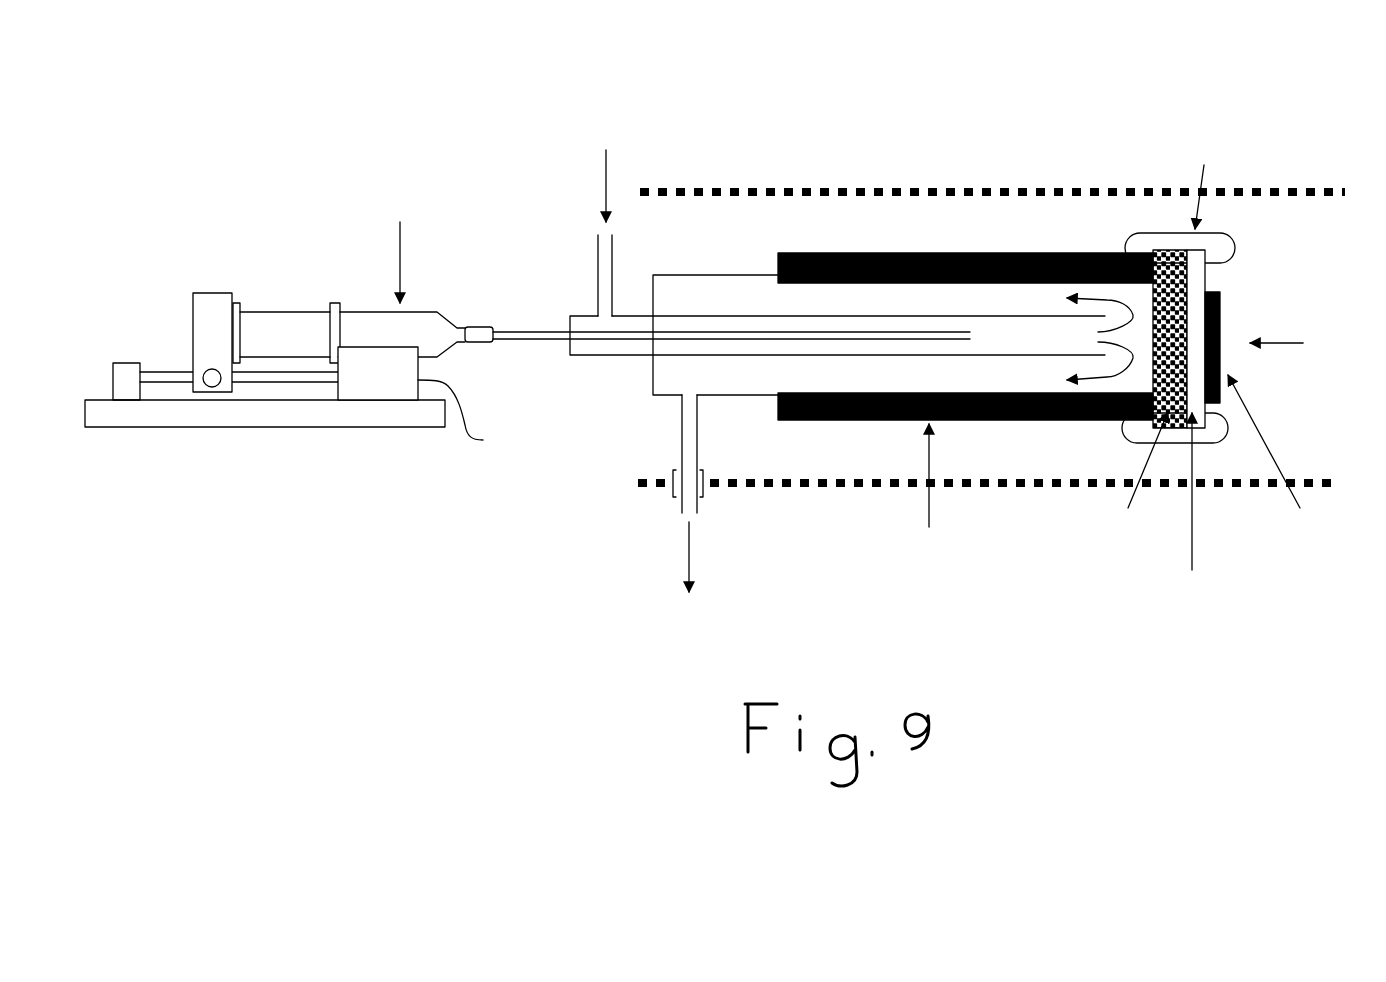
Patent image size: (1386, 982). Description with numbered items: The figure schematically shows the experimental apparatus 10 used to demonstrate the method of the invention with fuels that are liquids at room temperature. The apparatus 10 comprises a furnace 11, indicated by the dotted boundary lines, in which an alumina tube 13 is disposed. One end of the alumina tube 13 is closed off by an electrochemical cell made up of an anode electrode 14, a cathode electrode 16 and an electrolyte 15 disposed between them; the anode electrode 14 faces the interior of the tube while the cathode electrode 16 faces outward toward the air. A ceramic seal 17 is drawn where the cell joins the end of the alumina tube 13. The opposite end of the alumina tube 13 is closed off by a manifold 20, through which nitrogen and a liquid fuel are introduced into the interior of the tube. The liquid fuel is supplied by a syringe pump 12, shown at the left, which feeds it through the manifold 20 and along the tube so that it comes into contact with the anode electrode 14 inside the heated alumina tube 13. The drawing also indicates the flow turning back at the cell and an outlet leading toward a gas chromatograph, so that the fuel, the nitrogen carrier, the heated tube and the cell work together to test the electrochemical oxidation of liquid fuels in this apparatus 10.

The apparatus 10 is at (1077, 111).
The furnace 11 is at (762, 190).
The syringe pump 12 is at (527, 332).
The alumina tube 13 is at (1032, 422).
The anode electrode 14 is at (1205, 262).
The electrolyte 15 is at (1205, 308).
The cathode electrode 16 is at (1218, 362).
The ceramic seal 17 is at (1235, 248).
The manifold 20 is at (567, 266).